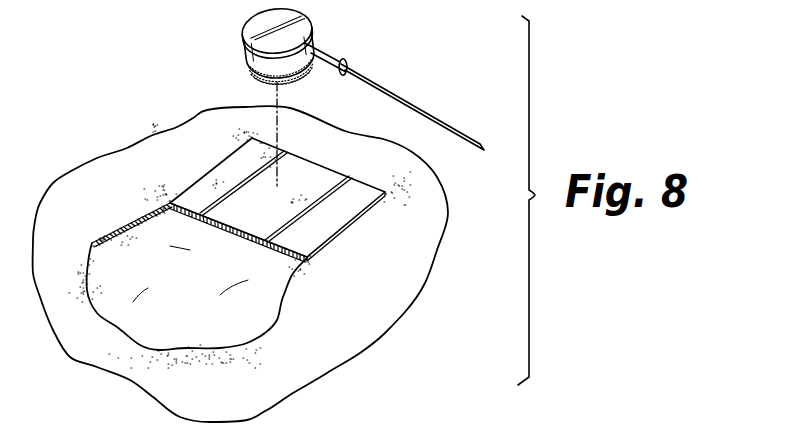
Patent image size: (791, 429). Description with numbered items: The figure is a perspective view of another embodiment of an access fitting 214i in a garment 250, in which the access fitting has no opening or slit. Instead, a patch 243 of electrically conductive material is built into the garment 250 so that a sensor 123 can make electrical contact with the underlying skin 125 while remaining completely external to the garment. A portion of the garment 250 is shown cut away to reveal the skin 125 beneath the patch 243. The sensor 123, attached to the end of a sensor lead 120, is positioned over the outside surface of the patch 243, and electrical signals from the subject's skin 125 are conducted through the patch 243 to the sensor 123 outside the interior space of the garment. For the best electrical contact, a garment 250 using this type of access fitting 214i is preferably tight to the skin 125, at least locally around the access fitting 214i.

The sensor 123 is at (250, 30).
The sensor lead 120 is at (425, 108).
The patch 243 is at (215, 173).
The access fitting 214i is at (325, 222).
The garment 250 is at (397, 297).
The skin 125 is at (275, 318).